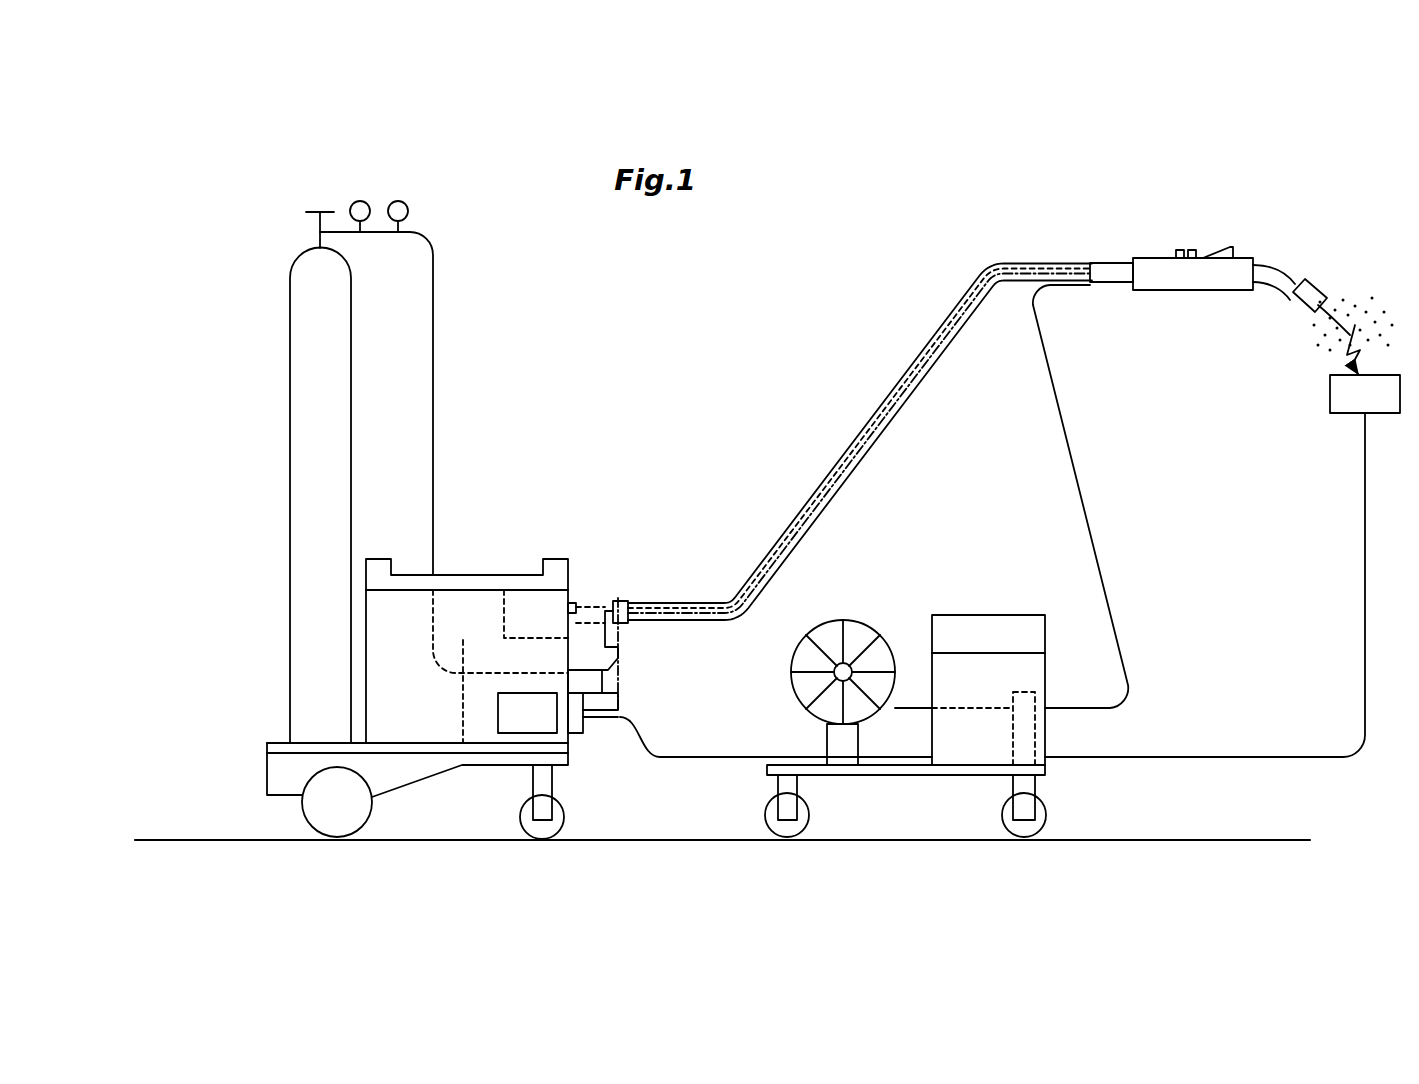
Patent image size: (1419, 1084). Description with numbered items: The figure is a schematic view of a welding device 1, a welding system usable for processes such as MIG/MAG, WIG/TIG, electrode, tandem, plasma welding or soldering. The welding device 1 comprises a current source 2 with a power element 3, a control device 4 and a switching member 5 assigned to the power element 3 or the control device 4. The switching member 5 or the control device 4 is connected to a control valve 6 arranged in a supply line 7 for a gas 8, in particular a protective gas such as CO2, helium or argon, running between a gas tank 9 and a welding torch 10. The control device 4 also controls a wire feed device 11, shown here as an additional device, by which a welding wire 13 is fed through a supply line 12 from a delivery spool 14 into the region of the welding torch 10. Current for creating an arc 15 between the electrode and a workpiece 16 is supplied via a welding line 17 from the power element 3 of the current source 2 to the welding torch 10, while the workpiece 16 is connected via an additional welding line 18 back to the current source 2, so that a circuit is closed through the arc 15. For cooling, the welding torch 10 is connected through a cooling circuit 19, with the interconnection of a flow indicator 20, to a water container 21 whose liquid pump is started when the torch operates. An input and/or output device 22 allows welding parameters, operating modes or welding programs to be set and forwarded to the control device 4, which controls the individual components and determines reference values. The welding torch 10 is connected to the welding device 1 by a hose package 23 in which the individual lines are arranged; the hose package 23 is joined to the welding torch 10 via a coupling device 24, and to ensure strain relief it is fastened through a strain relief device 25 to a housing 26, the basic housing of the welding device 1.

The welding device 1 is at (228, 200).
The current source 2 is at (517, 437).
The power element 3 is at (520, 720).
The control device 4 is at (463, 705).
The switching member 5 is at (582, 752).
The control valve 6 is at (580, 686).
The supply line 7 is at (1017, 280).
The gas 8 is at (1335, 268).
The gas tank 9 is at (318, 333).
The welding torch 10 is at (1240, 225).
The wire feed device 11 is at (1097, 802).
The supply line 12 is at (1090, 527).
The welding wire 13 is at (1340, 300).
The delivery spool 14 is at (855, 638).
The arc 15 is at (1338, 360).
The workpiece 16 is at (1375, 395).
The welding line 17 is at (940, 328).
The additional welding line 18 is at (1378, 604).
The cooling circuit 19 is at (965, 290).
The flow indicator 20 is at (600, 612).
The water container 21 is at (526, 603).
The input and/or output device 22 is at (557, 590).
The hose package 23 is at (960, 245).
The coupling device 24 is at (1110, 272).
The strain relief device 25 is at (625, 624).
The housing 26 is at (357, 610).